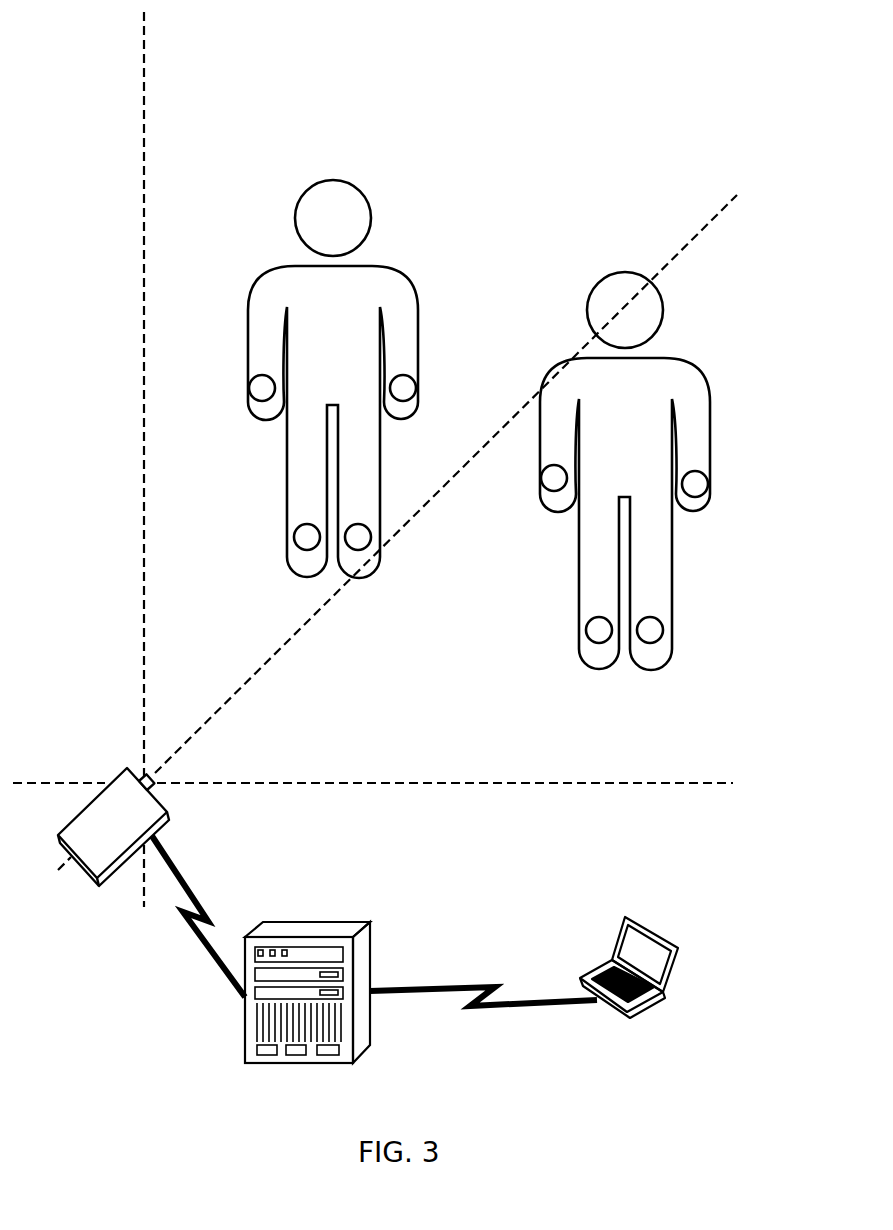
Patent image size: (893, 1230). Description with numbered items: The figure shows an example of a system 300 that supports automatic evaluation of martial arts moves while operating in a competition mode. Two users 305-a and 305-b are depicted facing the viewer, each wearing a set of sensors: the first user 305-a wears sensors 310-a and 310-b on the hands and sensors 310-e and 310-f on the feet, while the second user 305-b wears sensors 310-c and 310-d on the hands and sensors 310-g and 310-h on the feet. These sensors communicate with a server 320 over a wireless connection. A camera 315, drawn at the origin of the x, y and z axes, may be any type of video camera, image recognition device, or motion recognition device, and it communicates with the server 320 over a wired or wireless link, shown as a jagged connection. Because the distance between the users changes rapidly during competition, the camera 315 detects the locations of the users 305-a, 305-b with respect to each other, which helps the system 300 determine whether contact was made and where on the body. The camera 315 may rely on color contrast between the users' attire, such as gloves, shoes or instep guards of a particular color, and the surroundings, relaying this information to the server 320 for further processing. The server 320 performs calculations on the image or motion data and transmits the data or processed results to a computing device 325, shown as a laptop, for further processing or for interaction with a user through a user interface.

The system 300 is at (657, 1070).
The user 305-a is at (287, 490).
The user 305-b is at (673, 582).
The sensor 310-a is at (250, 378).
The sensor 310-b is at (414, 387).
The sensor 310-c is at (544, 468).
The sensor 310-d is at (707, 483).
The sensor 310-e is at (293, 537).
The sensor 310-f is at (371, 530).
The sensor 310-g is at (585, 632).
The sensor 310-h is at (665, 633).
The camera 315 is at (162, 827).
The server 320 is at (372, 1035).
The computing device 325 is at (657, 1003).